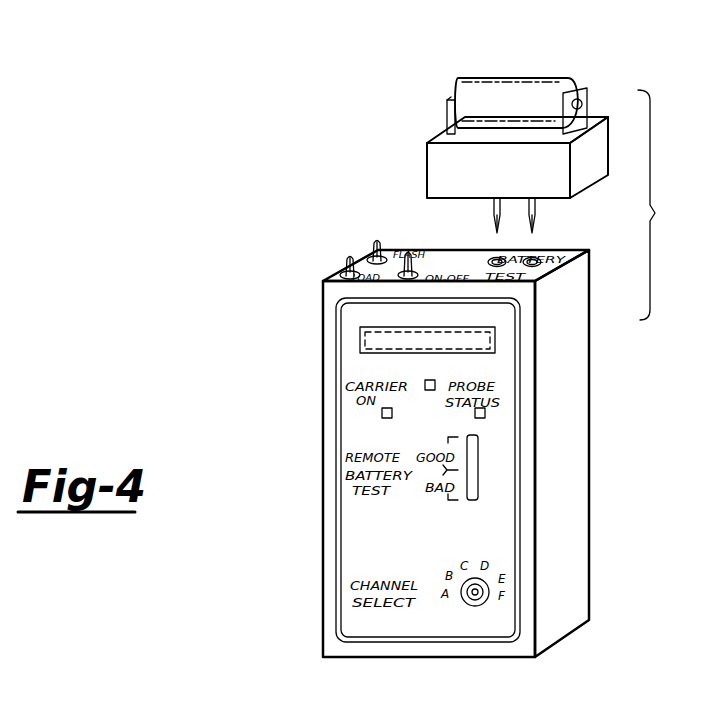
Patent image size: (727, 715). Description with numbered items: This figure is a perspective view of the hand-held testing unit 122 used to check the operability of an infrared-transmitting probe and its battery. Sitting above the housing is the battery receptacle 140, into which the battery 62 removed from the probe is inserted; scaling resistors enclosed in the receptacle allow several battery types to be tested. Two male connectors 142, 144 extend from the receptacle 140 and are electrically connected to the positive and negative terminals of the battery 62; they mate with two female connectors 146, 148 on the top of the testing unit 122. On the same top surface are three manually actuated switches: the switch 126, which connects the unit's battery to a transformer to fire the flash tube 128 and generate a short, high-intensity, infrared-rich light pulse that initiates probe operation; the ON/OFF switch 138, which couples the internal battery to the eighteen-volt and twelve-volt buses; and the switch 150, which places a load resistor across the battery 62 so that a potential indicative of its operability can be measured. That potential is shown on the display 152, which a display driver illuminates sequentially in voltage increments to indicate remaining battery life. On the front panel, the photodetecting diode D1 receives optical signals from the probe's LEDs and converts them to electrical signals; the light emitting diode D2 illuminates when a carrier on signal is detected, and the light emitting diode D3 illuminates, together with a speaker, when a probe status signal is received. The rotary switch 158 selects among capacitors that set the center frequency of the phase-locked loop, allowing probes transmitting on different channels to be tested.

The battery 62 is at (522, 88).
The testing unit 122 is at (667, 205).
The battery receptacle 140 is at (445, 168).
The male connector 142 is at (492, 210).
The male connector 144 is at (537, 209).
The female connector 146 is at (492, 256).
The female connector 148 is at (547, 272).
The manually actuated switch 150 is at (348, 257).
The manually actuated switch 126 is at (376, 244).
The ON/OFF switch 138 is at (409, 256).
The flash tube 128 is at (480, 339).
The photodetecting diode D1 is at (425, 381).
The light emitting diode D2 is at (382, 413).
The light emitting diode D3 is at (485, 413).
The display 152 is at (480, 455).
The rotary switch 158 is at (488, 600).